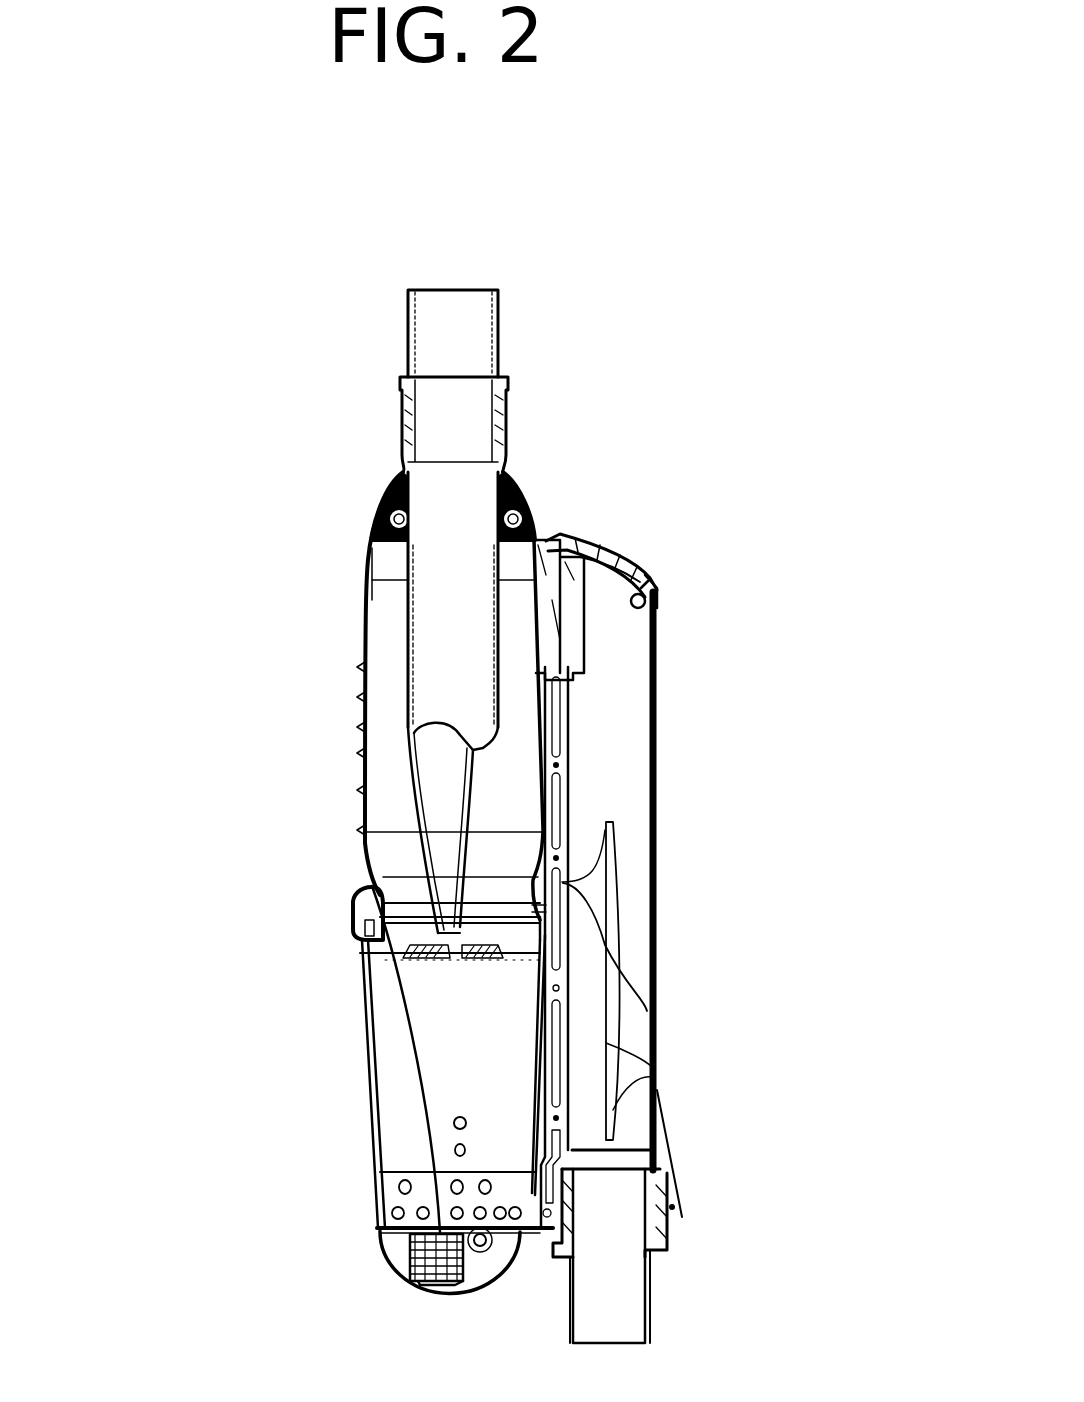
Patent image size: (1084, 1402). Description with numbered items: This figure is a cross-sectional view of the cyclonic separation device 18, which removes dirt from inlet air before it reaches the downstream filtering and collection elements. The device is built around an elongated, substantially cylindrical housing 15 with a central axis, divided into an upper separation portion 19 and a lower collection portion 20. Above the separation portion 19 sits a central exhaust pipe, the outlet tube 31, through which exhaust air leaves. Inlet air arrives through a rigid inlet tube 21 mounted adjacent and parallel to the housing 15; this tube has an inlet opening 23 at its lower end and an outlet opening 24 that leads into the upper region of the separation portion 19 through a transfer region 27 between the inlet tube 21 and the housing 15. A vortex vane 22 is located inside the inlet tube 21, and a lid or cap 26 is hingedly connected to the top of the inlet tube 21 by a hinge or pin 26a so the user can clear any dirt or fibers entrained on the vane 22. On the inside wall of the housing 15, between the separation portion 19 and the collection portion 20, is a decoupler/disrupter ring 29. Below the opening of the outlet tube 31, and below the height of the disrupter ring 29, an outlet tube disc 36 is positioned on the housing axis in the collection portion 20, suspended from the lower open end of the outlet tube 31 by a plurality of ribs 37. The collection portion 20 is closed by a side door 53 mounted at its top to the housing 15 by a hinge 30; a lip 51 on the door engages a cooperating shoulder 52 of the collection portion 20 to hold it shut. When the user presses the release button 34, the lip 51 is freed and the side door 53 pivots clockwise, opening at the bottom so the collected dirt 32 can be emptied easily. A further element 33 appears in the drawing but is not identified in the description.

The cylindrical housing 15 is at (305, 800).
The cyclonic separation device 18 is at (812, 533).
The upper separation portion 19 is at (350, 645).
The lower collection portion 20 is at (352, 1033).
The inlet tube 21 is at (705, 944).
The vortex vane 22 is at (657, 1047).
The inlet opening 23 is at (660, 1163).
The outlet opening 24 is at (577, 587).
The lid or cap 26 is at (655, 575).
The hinge or pin 26a is at (647, 601).
The transfer region 27 is at (545, 607).
The decoupler/disrupter ring 29 is at (357, 906).
The hinge 30 is at (357, 937).
The outlet tube 31 is at (497, 298).
The collected dirt 32 is at (453, 1125).
The bottom plate 33 is at (387, 1228).
The release button 34 is at (425, 1290).
The outlet tube disc 36 is at (508, 955).
The ribs 37 is at (483, 797).
The lip 51 is at (405, 1247).
The shoulder 52 is at (405, 1262).
The side door 53 is at (397, 1088).